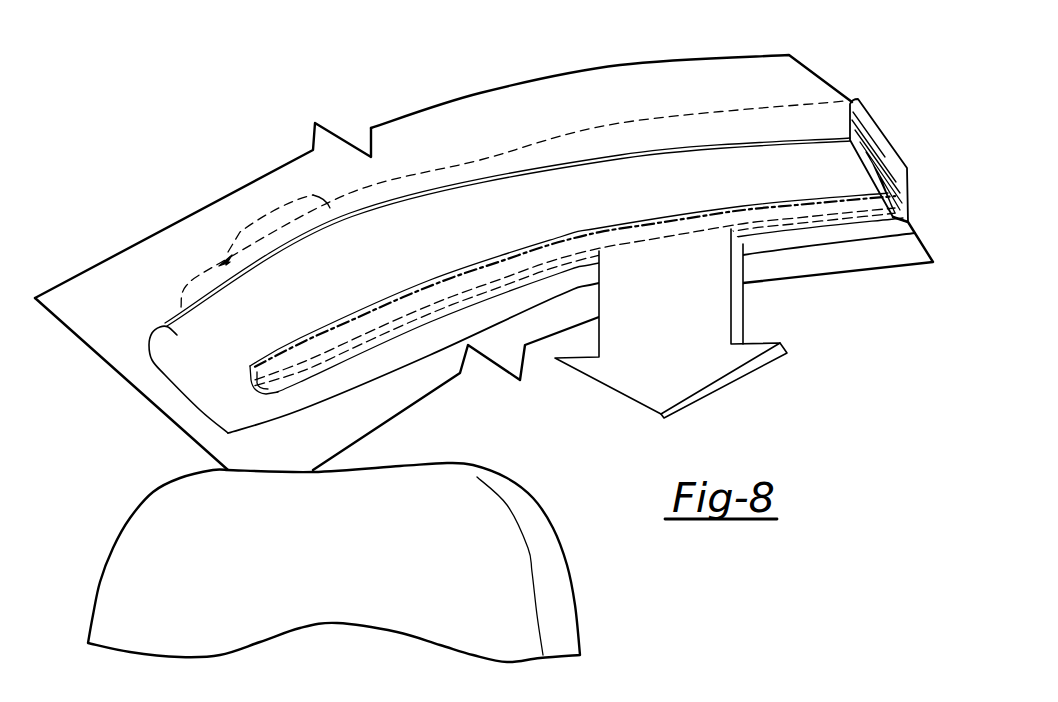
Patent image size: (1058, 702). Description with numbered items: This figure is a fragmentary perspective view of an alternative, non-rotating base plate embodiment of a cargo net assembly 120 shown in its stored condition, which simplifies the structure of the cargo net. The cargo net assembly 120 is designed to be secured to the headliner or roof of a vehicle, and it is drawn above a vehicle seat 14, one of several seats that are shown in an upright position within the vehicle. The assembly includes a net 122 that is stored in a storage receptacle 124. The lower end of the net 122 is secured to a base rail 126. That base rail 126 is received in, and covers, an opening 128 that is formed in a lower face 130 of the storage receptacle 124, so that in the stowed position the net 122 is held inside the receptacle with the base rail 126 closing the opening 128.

The seat 14 is at (558, 584).
The cargo net assembly 120 is at (112, 388).
The net 122 is at (873, 145).
The storage receptacle 124 is at (840, 115).
The base rail 126 is at (820, 210).
The opening 128 is at (250, 371).
The lower face 130 is at (165, 323).